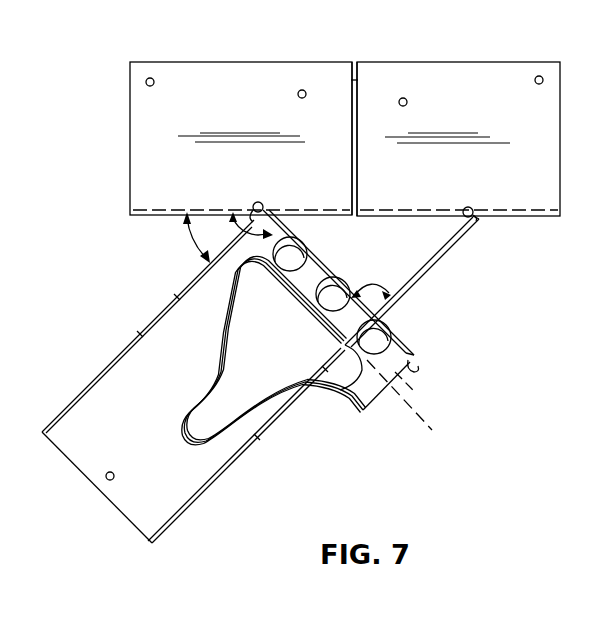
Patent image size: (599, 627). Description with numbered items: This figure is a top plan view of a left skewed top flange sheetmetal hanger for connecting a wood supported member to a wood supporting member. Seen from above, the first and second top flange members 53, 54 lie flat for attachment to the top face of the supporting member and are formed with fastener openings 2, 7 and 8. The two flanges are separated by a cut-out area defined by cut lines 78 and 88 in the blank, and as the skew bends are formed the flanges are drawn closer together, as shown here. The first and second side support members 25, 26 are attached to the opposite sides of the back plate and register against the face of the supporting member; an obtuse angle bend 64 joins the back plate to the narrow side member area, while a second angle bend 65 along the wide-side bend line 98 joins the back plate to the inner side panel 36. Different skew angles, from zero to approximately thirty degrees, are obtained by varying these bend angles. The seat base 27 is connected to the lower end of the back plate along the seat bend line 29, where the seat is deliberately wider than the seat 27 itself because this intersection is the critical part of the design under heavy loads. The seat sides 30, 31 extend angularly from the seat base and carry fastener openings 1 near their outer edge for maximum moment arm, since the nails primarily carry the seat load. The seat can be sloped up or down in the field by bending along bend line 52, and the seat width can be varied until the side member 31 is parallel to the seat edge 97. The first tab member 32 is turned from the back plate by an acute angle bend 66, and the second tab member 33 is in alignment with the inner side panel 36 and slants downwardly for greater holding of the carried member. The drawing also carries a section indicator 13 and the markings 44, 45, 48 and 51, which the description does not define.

The fastener openings 1 is at (114, 478).
The fastener openings 2 is at (305, 98).
The fastener openings 7 is at (537, 84).
The fastener openings 8 is at (153, 86).
The hinge knuckle / section line 13 is at (262, 204).
The first side support member 25 is at (138, 223).
The second side support member 26 is at (531, 226).
The seat base 27 is at (122, 429).
The seat bend line 29 is at (416, 368).
The seat side 30 is at (66, 406).
The seat side 31 is at (185, 514).
The first tab member 32 is at (152, 320).
The second tab member 33 is at (284, 415).
The inner side panel 36 is at (448, 247).
The ring 44 is at (392, 333).
The axis 45 is at (418, 403).
The wire loop 48 is at (228, 428).
The tab 51 is at (354, 405).
The bend line 52 is at (416, 428).
The first top flange member 53 is at (220, 60).
The second top flange member 54 is at (492, 60).
The obtuse angle bend 64 is at (268, 216).
The second angle bend 65 is at (377, 283).
The acute angle bend 66 is at (193, 243).
The cut line 78 is at (352, 80).
The cut line 88 is at (353, 110).
The seat edge 97 is at (364, 408).
The wide-side bend line 98 is at (372, 302).